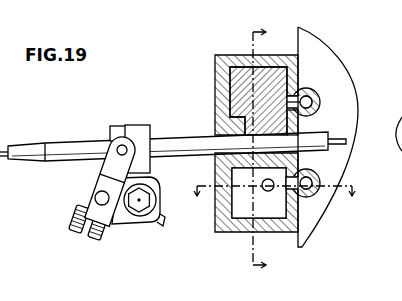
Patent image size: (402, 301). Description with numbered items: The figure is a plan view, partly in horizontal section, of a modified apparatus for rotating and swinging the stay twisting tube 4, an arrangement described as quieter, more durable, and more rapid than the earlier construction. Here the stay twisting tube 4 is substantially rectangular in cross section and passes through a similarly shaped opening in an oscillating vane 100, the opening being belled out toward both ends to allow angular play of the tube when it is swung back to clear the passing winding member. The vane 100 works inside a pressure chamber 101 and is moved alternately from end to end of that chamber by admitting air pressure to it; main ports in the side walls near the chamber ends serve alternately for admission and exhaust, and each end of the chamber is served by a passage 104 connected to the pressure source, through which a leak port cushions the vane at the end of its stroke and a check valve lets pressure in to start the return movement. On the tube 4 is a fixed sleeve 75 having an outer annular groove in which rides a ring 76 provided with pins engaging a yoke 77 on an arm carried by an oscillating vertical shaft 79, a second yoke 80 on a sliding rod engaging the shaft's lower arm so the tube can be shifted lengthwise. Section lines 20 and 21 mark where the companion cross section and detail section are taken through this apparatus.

The stay twisting tube 4 is at (57, 147).
The fixed sleeve 75 is at (146, 126).
The ring 76 is at (118, 127).
The yoke 77 is at (114, 161).
The oscillating vertical shaft 79 is at (99, 198).
The yoke 80 is at (160, 225).
The oscillating vane 100 is at (240, 77).
The pressure chamber 101 is at (238, 200).
The passage 104 is at (305, 245).
The section line 20- 20 is at (259, 151).
The section line 21- 21 is at (278, 186).